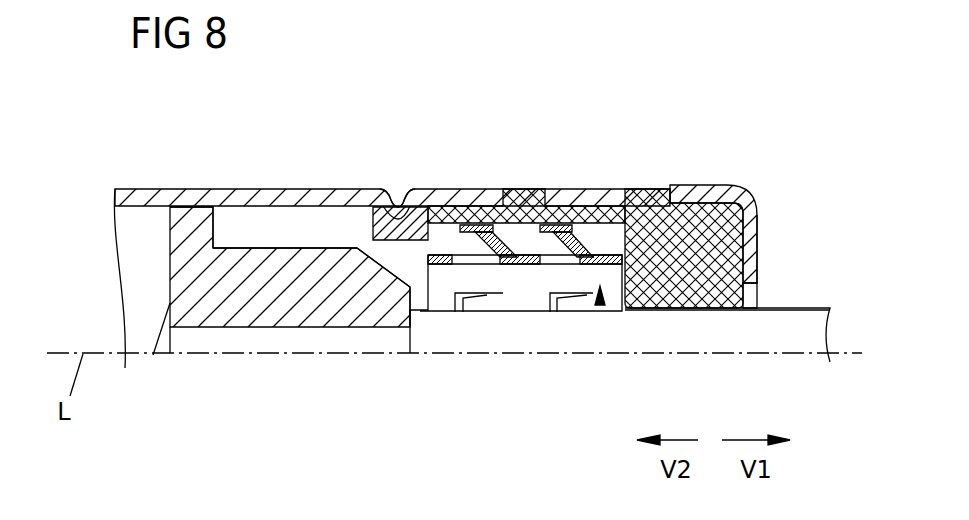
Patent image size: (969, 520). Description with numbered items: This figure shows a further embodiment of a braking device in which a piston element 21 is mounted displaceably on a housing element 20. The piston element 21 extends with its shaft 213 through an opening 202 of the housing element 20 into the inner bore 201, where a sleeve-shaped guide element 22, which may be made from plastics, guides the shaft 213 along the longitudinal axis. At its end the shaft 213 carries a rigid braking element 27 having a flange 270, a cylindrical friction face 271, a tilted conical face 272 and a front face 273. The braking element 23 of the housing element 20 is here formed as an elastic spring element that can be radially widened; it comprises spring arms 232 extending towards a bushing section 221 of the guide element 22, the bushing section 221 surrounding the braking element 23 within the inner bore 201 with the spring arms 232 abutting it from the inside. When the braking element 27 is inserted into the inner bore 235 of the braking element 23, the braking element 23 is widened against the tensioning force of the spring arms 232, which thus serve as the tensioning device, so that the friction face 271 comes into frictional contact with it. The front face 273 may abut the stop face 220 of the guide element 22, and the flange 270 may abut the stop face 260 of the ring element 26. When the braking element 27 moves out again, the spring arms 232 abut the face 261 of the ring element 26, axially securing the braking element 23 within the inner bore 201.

The housing element 20 is at (723, 195).
The piston element 21 is at (803, 308).
The guide element 22 is at (731, 243).
The braking element 23 is at (606, 250).
The ring element 26 is at (390, 227).
The braking element 27 is at (228, 312).
The inner bore 201 is at (133, 247).
The opening 202 is at (758, 283).
The shaft 213 is at (728, 333).
The stop face 220 is at (623, 290).
The bushing section 221 is at (518, 205).
The spring arms 232 is at (490, 228).
The inner bore 235 is at (597, 308).
The stop face 260 is at (372, 229).
The face 261 is at (433, 220).
The flange 270 is at (183, 210).
The friction face 271 is at (252, 247).
The conical face 272 is at (389, 262).
The front face 273 is at (412, 308).